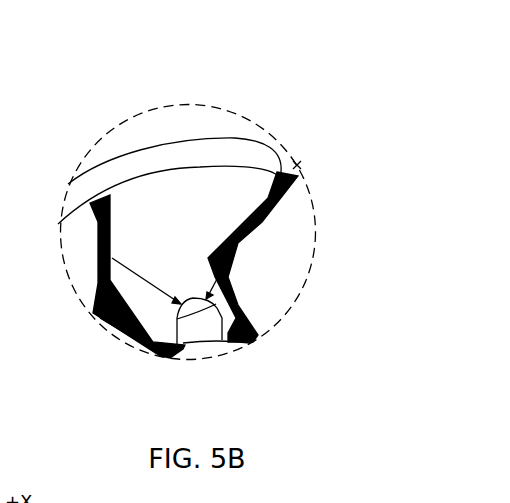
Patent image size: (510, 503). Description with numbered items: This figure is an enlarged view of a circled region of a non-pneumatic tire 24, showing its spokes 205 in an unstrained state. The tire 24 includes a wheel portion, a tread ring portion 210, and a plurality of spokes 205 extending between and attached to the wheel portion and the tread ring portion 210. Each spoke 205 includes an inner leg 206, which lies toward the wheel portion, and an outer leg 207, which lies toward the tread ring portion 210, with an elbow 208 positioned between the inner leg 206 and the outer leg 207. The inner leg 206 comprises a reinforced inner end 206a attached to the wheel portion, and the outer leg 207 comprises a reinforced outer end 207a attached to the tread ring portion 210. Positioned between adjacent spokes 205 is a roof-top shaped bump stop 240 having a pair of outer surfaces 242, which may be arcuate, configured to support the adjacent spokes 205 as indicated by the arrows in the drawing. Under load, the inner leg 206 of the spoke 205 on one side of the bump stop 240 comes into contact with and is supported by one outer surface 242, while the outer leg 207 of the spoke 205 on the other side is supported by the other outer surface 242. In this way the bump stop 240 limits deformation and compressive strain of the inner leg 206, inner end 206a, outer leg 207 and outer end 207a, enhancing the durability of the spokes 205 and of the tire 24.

The non-pneumatic tire 24 is at (227, 93).
The spoke 205 is at (266, 230).
The inner leg 206 is at (137, 333).
The reinforced inner end 206a is at (170, 354).
The outer leg 207 is at (98, 259).
The reinforced outer end 207a is at (100, 200).
The elbow 208 is at (96, 303).
The tread ring portion 210 is at (298, 165).
The bump stop 240 is at (207, 340).
The outer surface 242 is at (178, 318).